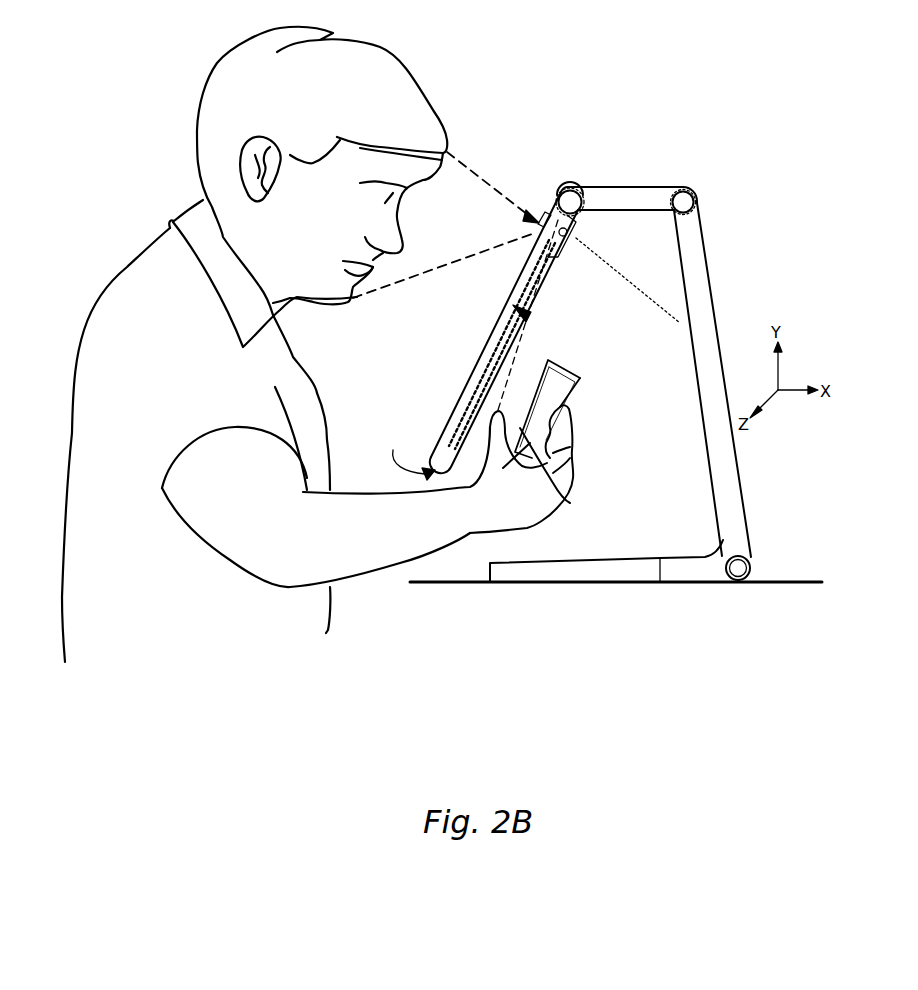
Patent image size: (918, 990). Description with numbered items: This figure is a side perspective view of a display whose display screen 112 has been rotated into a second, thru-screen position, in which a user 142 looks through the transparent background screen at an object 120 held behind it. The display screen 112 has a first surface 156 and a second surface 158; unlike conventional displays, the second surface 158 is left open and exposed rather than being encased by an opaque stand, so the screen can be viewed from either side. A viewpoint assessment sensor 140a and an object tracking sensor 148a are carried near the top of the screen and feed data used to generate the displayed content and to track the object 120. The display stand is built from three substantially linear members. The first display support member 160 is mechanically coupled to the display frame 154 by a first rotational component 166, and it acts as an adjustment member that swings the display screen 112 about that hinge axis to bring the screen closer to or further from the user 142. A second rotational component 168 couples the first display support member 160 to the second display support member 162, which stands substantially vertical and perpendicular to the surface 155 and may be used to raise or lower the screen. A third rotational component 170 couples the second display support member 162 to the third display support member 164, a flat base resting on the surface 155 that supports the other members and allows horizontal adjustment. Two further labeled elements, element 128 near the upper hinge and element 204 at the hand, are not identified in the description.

The user 142 is at (128, 313).
The viewpoint assessment sensor 140a is at (540, 223).
The first rotational component 166 is at (567, 185).
The hinge 128 is at (567, 205).
The object tracking sensor 148a is at (572, 230).
The first display support member 160 is at (660, 190).
The second rotational component 168 is at (687, 203).
The second display support member 162 is at (707, 303).
The third rotational component 170 is at (743, 568).
The surface 155 is at (790, 583).
The third display support member 164 is at (575, 573).
The object 120 is at (579, 382).
The hand of user 204 is at (570, 503).
The display screen 112 is at (530, 313).
The second surface 158 is at (503, 347).
The first surface 156 is at (468, 384).
The display frame 154 is at (404, 454).